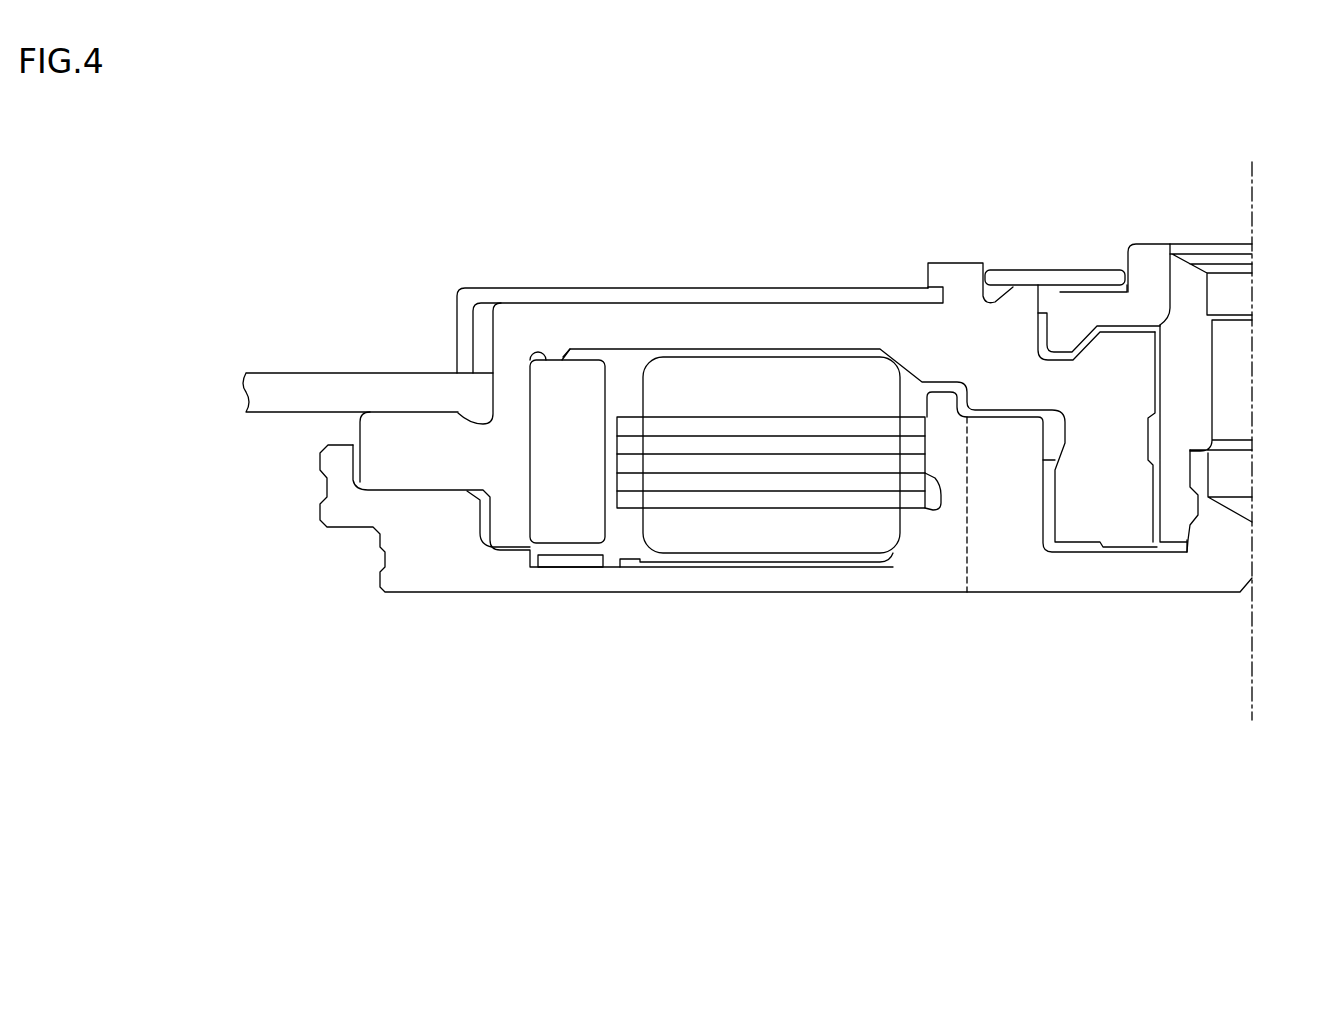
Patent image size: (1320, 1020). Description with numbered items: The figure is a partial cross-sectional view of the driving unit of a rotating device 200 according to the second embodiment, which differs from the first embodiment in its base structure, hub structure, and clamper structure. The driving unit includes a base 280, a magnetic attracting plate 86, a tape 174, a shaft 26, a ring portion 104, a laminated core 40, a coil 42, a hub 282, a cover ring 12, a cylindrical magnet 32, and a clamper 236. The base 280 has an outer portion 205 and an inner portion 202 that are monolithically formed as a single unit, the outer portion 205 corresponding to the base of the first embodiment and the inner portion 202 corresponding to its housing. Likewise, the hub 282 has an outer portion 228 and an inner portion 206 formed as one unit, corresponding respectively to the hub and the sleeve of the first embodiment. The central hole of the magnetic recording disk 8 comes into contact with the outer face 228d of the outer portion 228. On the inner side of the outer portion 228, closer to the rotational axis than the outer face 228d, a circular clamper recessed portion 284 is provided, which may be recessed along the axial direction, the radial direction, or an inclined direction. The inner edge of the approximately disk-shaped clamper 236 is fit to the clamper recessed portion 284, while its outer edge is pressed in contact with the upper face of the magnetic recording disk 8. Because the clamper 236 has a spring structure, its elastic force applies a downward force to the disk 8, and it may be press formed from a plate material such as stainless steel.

The magnetic recording disk 8 is at (292, 385).
The outer face 228d is at (490, 324).
The cylindrical magnet 32 is at (575, 385).
The clamper 236 is at (795, 295).
The clamper recessed portion 284 is at (908, 290).
The hub 282 is at (962, 200).
The outer portion 228 is at (1000, 320).
The inner portion 206 is at (1060, 388).
The cover ring 12 is at (1106, 290).
The ring portion 104 is at (1147, 255).
The shaft 26 is at (1190, 297).
The magnetic attracting plate 86 is at (567, 558).
The tape 174 is at (635, 565).
The laminated core 40 is at (703, 500).
The coil 42 is at (815, 527).
The outer portion 205 is at (933, 573).
The inner portion 202 is at (1010, 573).
The base 280 is at (900, 663).
The rotating device 200 is at (757, 805).